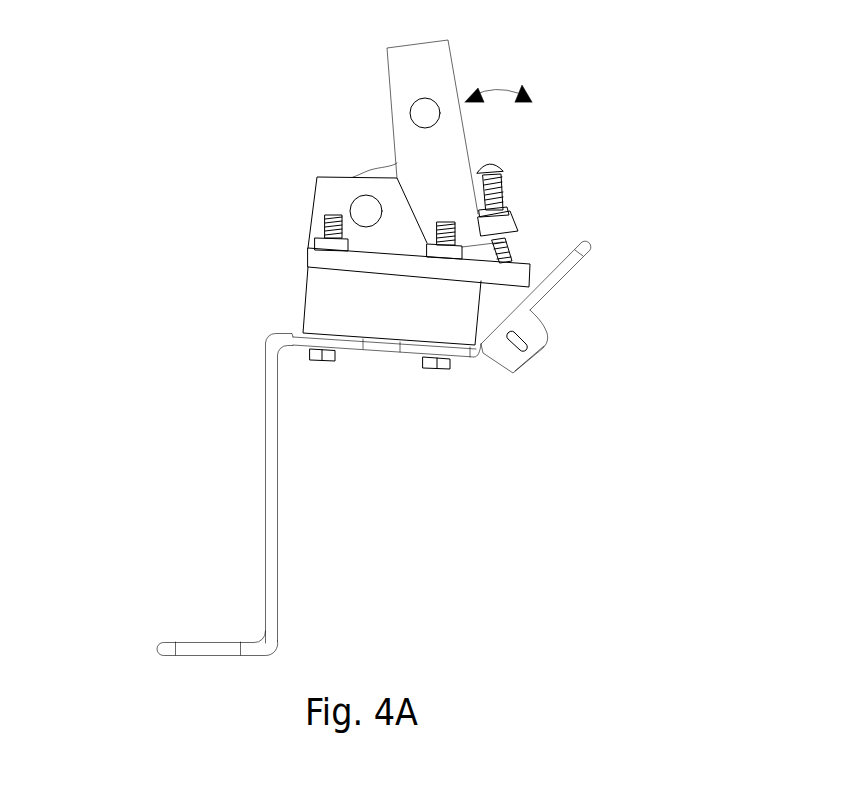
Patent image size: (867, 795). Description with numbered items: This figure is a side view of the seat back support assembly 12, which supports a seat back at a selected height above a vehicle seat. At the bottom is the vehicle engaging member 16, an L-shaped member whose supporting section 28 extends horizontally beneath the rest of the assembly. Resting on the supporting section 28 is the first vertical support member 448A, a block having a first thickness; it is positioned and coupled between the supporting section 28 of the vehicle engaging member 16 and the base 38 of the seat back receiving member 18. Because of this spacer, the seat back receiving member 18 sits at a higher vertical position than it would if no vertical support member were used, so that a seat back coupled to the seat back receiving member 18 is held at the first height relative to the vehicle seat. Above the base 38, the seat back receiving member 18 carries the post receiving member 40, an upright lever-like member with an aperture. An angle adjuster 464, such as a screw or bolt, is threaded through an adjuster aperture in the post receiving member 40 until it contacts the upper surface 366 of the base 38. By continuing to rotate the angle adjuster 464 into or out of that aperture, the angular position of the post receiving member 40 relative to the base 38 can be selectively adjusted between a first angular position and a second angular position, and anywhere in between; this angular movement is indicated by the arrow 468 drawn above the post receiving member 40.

The seat back support assembly 12 is at (178, 235).
The vehicle engaging member 16 is at (272, 467).
The seat back receiving member 18 is at (332, 183).
The supporting section 28 is at (380, 350).
The base 38 is at (322, 261).
The post receiving member 40 is at (410, 80).
The upper surface 366 is at (528, 263).
The first vertical support member 448A is at (315, 305).
The angle adjuster 464 is at (503, 170).
The arrow 468 is at (494, 88).